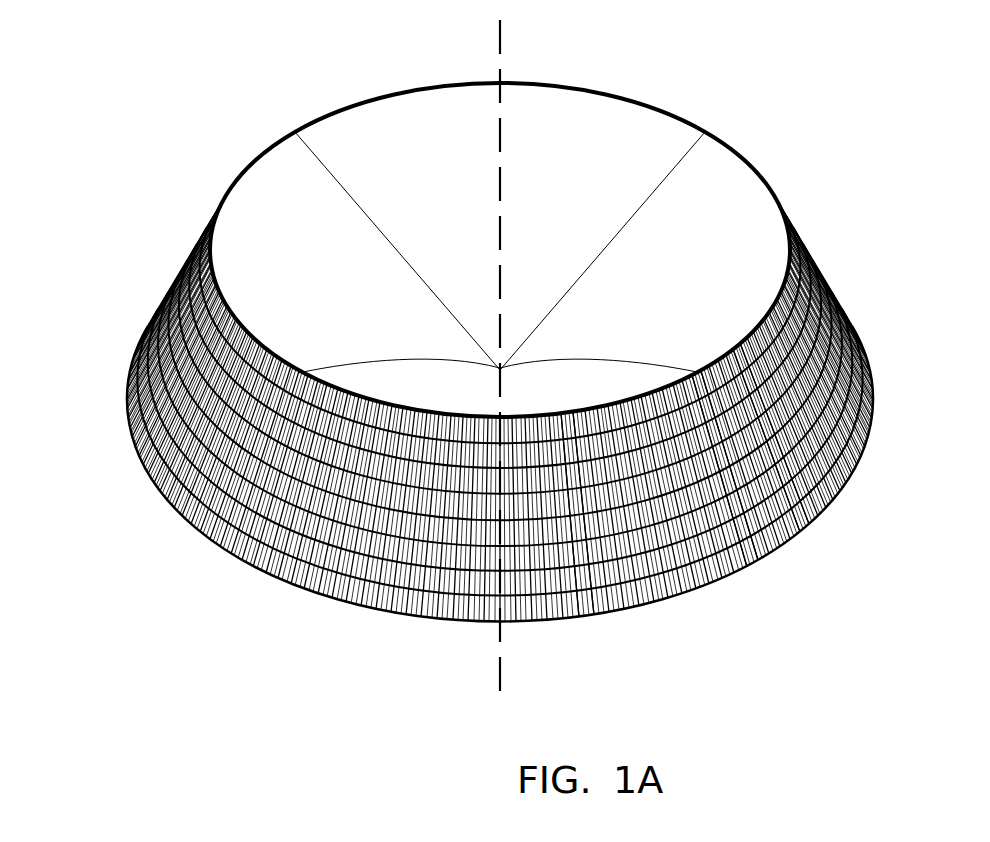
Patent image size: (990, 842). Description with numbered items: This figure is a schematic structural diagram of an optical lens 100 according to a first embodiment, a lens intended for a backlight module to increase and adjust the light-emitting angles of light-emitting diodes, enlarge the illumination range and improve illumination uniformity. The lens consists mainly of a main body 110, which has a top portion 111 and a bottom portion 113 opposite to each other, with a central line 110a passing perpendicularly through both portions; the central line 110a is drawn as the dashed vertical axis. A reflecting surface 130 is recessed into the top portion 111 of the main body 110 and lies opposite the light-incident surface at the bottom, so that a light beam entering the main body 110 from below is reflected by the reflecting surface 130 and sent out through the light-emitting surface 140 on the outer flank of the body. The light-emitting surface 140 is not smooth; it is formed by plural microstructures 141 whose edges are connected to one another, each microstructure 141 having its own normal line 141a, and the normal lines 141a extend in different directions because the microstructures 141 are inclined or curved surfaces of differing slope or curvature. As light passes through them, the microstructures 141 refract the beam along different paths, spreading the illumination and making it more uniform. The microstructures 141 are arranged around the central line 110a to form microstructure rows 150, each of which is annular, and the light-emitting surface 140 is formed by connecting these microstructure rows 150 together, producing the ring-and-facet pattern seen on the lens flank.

The optical lens 100 is at (158, 83).
The main body 110 is at (840, 307).
The central line 110a is at (502, 38).
The top portion 111 is at (707, 123).
The bottom portion 113 is at (806, 546).
The reflecting surface 130 is at (558, 193).
The light-emitting surface 140 is at (145, 312).
The microstructures 141 is at (678, 460).
The normal line 141a is at (728, 452).
The microstructure rows 150 is at (560, 483).